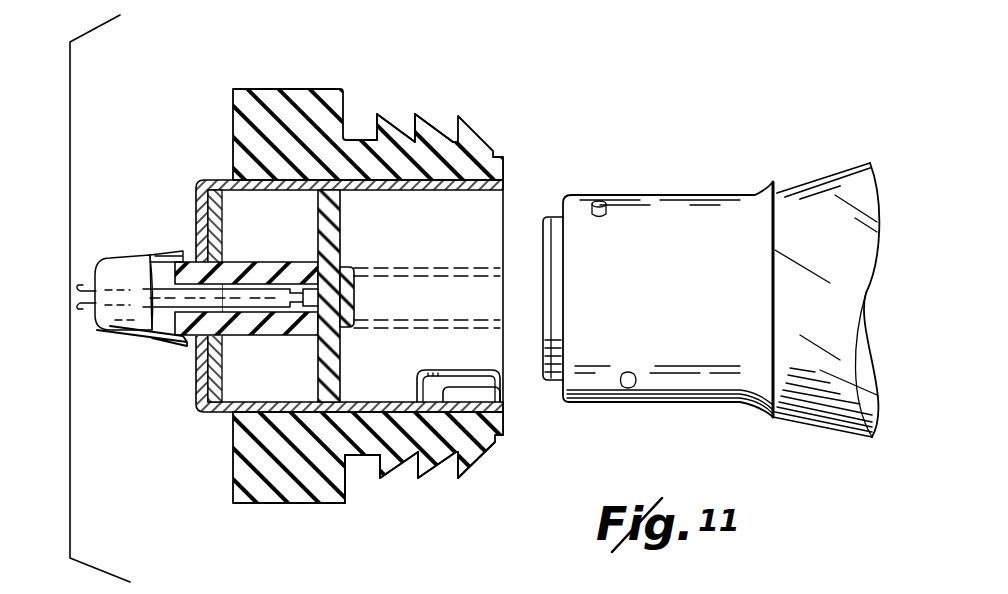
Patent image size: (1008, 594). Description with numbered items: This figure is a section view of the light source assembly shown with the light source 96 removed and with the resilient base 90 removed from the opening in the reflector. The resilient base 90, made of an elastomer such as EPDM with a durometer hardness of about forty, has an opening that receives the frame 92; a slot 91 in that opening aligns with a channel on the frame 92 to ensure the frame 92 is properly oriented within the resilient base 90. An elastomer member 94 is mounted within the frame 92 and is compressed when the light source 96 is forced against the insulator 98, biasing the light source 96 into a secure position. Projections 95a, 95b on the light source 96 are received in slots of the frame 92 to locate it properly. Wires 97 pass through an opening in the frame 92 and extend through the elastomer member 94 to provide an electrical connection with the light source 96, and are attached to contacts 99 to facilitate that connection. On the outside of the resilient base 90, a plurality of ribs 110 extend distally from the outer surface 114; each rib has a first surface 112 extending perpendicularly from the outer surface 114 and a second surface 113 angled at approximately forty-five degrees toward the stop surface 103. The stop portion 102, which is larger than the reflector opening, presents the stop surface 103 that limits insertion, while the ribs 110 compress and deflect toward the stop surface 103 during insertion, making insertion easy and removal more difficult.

The resilient base 90 is at (308, 98).
The slot 91 is at (200, 374).
The frame 92 is at (200, 408).
The elastomer member 94 is at (236, 265).
The projection 95a is at (603, 205).
The projection 95b is at (628, 390).
The light source 96 is at (830, 193).
The wires 97 is at (88, 305).
The insulator 98 is at (318, 222).
The contacts 99 is at (350, 295).
The stop portion 102 is at (236, 505).
The stop surface 103 is at (362, 497).
The ribs 110 is at (455, 135).
The first surface 112 is at (413, 470).
The second surface 113 is at (447, 462).
The outer surface 114 is at (460, 470).